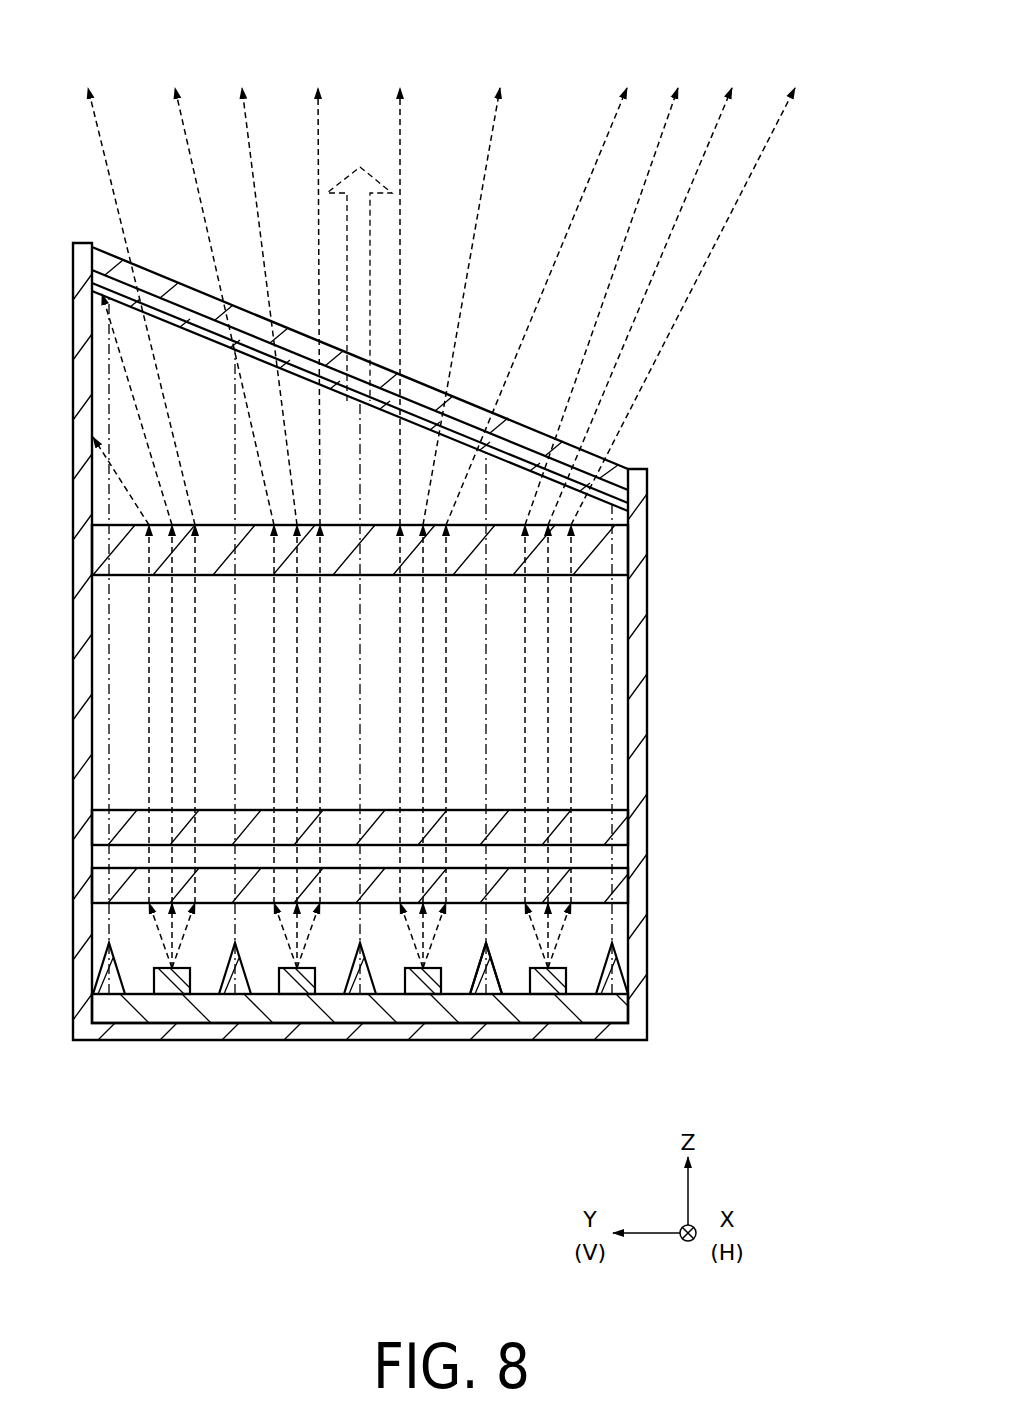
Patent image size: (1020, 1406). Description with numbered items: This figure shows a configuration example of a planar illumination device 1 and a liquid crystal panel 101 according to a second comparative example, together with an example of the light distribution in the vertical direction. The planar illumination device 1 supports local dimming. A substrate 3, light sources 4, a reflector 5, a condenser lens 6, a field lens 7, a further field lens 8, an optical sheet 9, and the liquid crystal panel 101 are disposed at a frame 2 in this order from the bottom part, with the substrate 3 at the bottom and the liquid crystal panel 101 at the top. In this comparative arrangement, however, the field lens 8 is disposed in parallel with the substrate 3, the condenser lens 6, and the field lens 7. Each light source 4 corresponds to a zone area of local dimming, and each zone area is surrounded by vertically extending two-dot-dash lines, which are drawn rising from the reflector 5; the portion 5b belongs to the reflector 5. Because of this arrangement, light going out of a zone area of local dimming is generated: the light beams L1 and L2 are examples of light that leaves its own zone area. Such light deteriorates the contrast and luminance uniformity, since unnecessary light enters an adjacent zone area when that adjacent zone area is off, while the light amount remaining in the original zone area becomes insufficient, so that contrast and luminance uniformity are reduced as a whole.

The planar illumination device 1 is at (726, 406).
The liquid crystal panel 101 is at (622, 480).
The optical sheet 9 is at (628, 503).
The field lens 8 is at (620, 548).
The frame 2 is at (638, 690).
The field lens 7 is at (620, 822).
The condenser lens 6 is at (620, 878).
The light source 4 is at (567, 975).
The substrate 3 is at (620, 1006).
The reflector 5 is at (497, 975).
The prism side face 5b is at (478, 975).
The light beam L1 is at (184, 112).
The light beam L2 is at (620, 107).